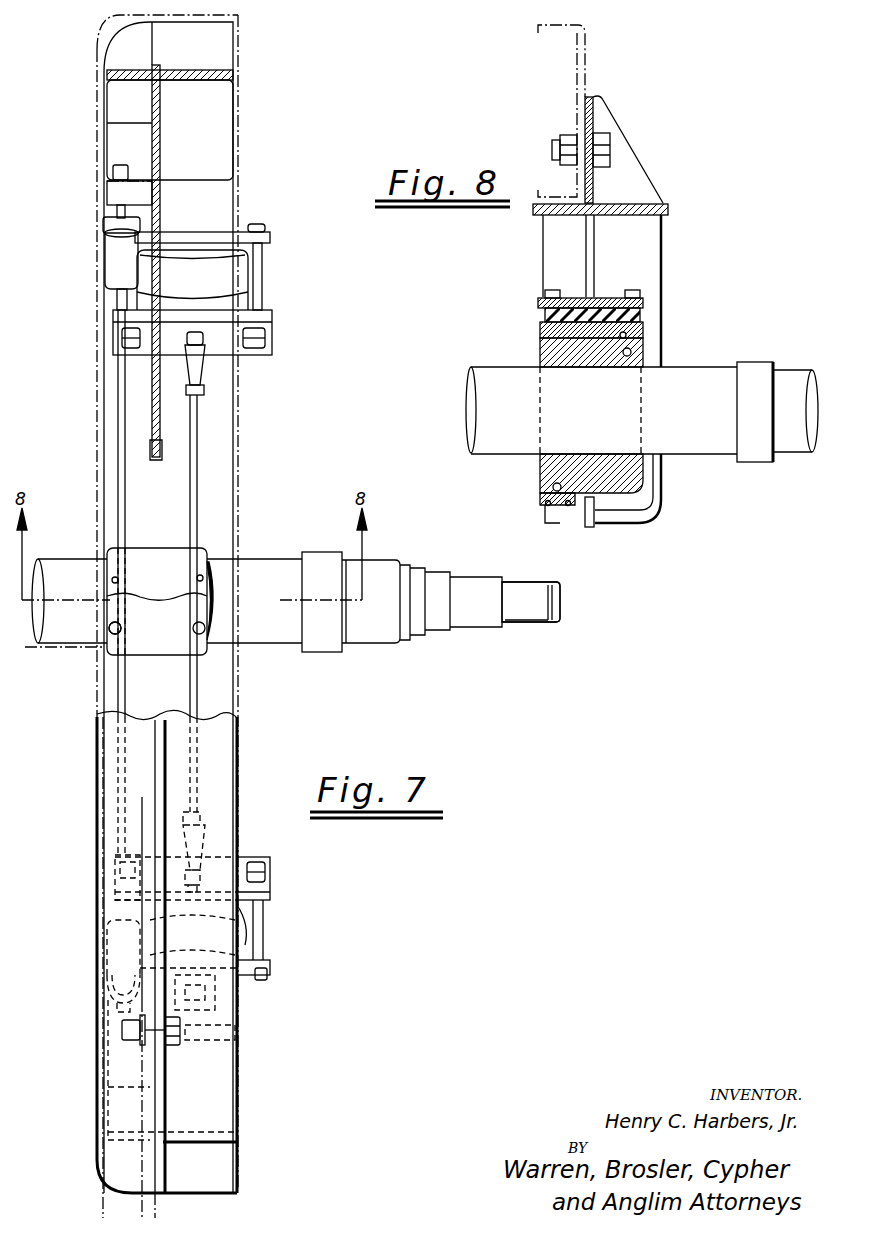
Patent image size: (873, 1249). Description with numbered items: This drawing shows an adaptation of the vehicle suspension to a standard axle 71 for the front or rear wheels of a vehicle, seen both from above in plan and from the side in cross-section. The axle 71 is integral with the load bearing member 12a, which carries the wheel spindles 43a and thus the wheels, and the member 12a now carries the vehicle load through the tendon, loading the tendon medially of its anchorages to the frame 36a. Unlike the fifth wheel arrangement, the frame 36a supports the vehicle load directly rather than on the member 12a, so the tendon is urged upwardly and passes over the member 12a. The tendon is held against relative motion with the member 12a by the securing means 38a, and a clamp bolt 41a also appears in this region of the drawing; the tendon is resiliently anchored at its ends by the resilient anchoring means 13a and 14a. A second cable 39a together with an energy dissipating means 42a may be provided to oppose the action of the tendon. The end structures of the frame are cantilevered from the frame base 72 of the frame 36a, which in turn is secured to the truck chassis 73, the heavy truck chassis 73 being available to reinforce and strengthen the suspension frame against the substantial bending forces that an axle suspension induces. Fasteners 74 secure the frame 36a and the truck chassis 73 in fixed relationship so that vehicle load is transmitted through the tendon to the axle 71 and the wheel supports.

In FIG. 7, the load bearing member 12a is at (192, 442).
In FIG. 8, the load bearing member 12a is at (632, 350).
In FIG. 7, the resilient anchoring means 13a is at (268, 283).
In FIG. 7, the resilient anchoring means 14a is at (277, 892).
In FIG. 7, the frame 36a is at (255, 792).
In FIG. 7, the securing means 38a is at (168, 625).
In FIG. 8, the securing means 38a is at (610, 298).
In FIG. 7, the second cable 39a is at (122, 677).
In FIG. 8, the second cable 39a is at (543, 482).
In FIG. 8, the clamp bolt 41a is at (556, 522).
In FIG. 7, the energy dissipating means 42a is at (105, 262).
In FIG. 7, the wheel spindles 43a is at (481, 612).
In FIG. 7, the axle 71 is at (262, 575).
In FIG. 8, the axle 71 is at (497, 385).
In FIG. 7, the frame base 72 is at (238, 700).
In FIG. 8, the frame base 72 is at (660, 235).
In FIG. 7, the truck chassis 73 is at (160, 458).
In FIG. 8, the truck chassis 73 is at (587, 60).
In FIG. 7, the fasteners 74 is at (122, 1035).
In FIG. 8, the fasteners 74 is at (612, 147).